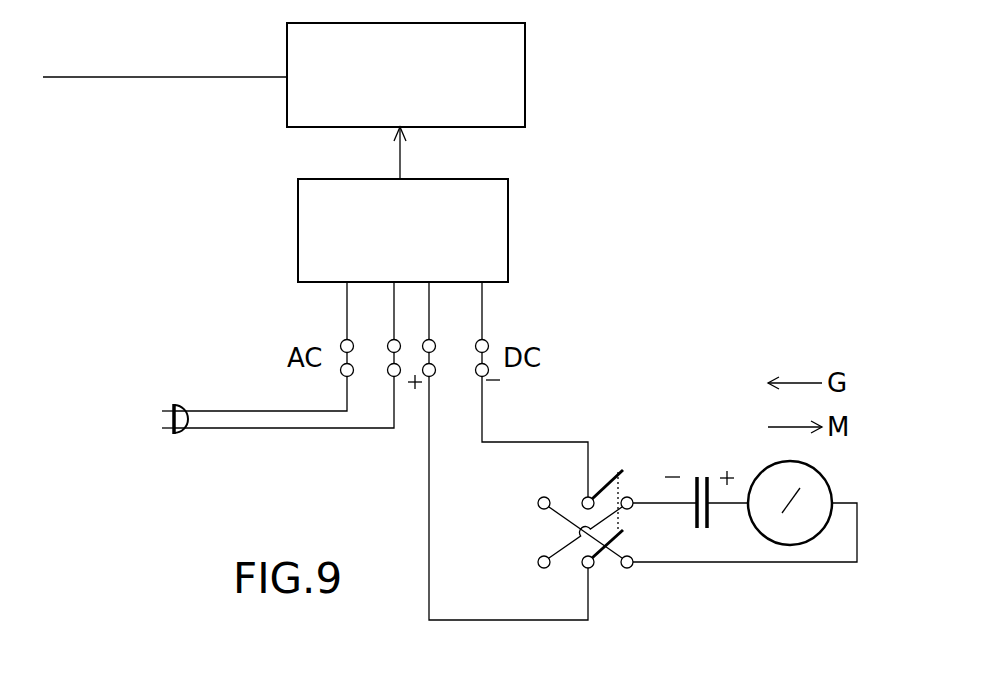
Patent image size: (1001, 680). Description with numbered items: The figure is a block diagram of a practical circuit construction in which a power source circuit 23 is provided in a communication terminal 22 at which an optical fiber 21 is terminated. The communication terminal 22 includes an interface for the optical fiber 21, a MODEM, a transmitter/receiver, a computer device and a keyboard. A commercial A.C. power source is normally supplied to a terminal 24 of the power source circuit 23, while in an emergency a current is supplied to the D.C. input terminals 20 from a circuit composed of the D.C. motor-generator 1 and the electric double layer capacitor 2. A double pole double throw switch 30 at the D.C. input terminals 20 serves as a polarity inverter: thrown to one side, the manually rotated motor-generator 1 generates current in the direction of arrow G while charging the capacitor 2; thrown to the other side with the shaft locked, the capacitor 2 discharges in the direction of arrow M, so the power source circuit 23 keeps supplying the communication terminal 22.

The D.C. motor-generator 1 is at (833, 492).
The electric double layer capacitor 2 is at (704, 477).
The D.C. input terminals 20 is at (432, 341).
The optical fiber 21 is at (177, 77).
The communication terminal 22 is at (525, 27).
The power source circuit 23 is at (508, 186).
The terminal 24 is at (363, 322).
The double pole double throw switch 30 is at (623, 448).